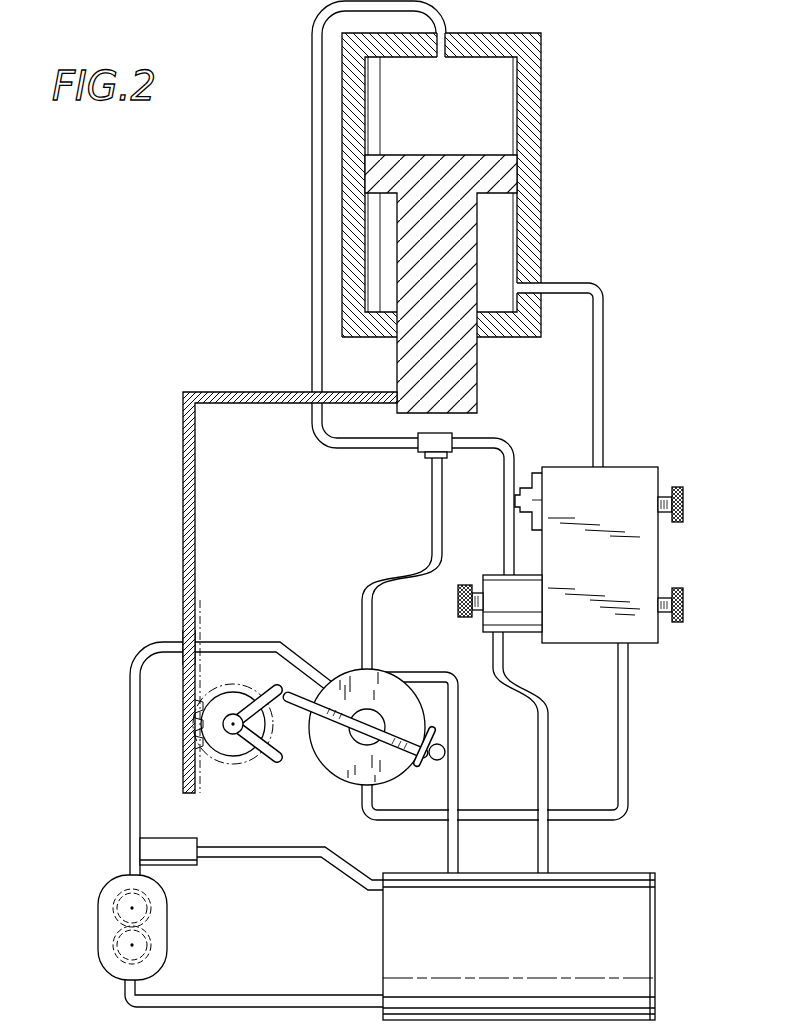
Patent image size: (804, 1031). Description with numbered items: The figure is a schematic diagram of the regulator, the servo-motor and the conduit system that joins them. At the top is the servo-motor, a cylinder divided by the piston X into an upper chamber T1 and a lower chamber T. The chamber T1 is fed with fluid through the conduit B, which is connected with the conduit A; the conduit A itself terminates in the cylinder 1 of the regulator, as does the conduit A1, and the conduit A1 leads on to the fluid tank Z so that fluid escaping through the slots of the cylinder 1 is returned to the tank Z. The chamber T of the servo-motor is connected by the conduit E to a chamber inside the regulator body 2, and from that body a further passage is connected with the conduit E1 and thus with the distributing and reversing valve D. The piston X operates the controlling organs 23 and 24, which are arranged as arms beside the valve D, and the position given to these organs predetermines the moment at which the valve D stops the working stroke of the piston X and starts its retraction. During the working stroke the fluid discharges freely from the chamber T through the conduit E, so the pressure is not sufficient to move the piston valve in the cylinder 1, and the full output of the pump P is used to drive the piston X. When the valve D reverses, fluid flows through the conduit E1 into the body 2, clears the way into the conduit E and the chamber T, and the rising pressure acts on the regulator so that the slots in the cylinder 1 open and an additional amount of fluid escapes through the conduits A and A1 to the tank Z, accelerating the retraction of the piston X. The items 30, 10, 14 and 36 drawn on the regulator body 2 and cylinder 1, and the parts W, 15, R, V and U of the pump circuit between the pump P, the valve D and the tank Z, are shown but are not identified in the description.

The chamber T1 is at (500, 80).
The piston X is at (507, 170).
The chamber T is at (500, 243).
The conduit E is at (605, 323).
The conduit A is at (486, 445).
The conduit B is at (383, 442).
The valve 30 is at (540, 486).
The adjusting knob 10 is at (683, 490).
The body 2 is at (635, 551).
The adjusting knob 14 is at (458, 590).
The cylinder 1 is at (495, 615).
The adjusting knob 36 is at (683, 606).
The conduit A1 is at (500, 662).
The conduit E1 is at (628, 695).
The controlling organ 23 is at (270, 690).
The controlling organ 24 is at (267, 760).
The distributing and reversing valve D is at (342, 758).
The conduit W is at (450, 707).
The weight 15 is at (445, 752).
The return conduit R is at (137, 713).
The valve V is at (177, 843).
The conduit U is at (320, 850).
The pump P is at (157, 917).
The fluid tank Z is at (612, 903).